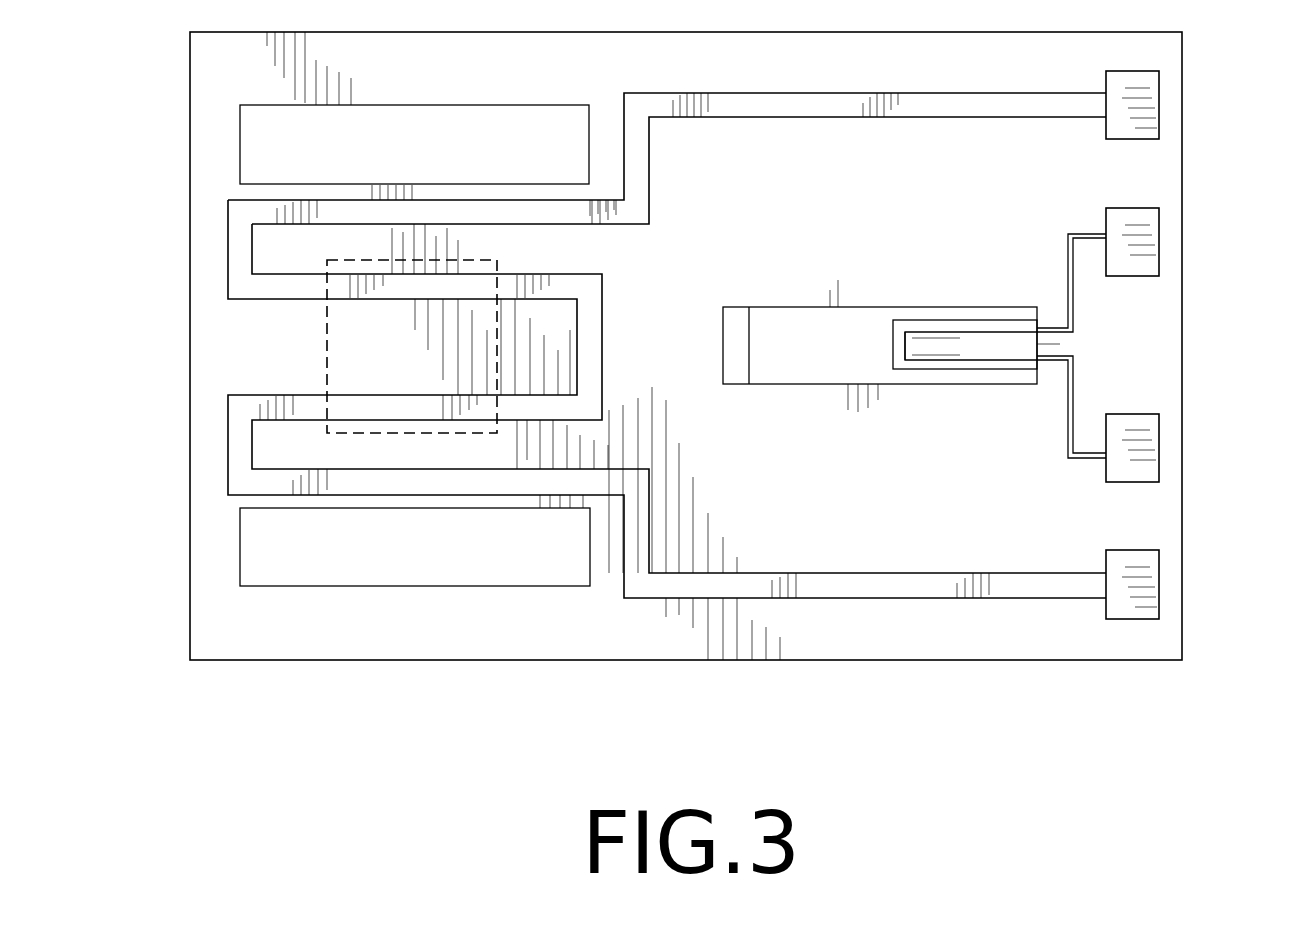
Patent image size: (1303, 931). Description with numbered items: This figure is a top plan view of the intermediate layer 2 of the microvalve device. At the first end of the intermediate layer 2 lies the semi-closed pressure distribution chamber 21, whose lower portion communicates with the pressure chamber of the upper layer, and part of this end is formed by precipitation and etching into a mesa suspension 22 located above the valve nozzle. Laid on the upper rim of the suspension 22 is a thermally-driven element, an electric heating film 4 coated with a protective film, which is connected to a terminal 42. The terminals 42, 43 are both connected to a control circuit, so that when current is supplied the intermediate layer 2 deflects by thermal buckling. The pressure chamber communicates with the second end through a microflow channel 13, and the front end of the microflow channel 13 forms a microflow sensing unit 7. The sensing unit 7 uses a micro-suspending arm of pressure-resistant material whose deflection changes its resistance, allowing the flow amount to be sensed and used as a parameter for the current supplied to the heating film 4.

The intermediate layer 2 is at (1167, 173).
The electric heating film 4 is at (240, 247).
The pressure distribution chamber 21 is at (457, 122).
The mesa suspension 22 is at (337, 345).
The microflow channel 13 is at (806, 376).
The microflow sensing unit 7 is at (984, 348).
The terminal 42 is at (1147, 105).
The terminal 43 is at (1136, 247).